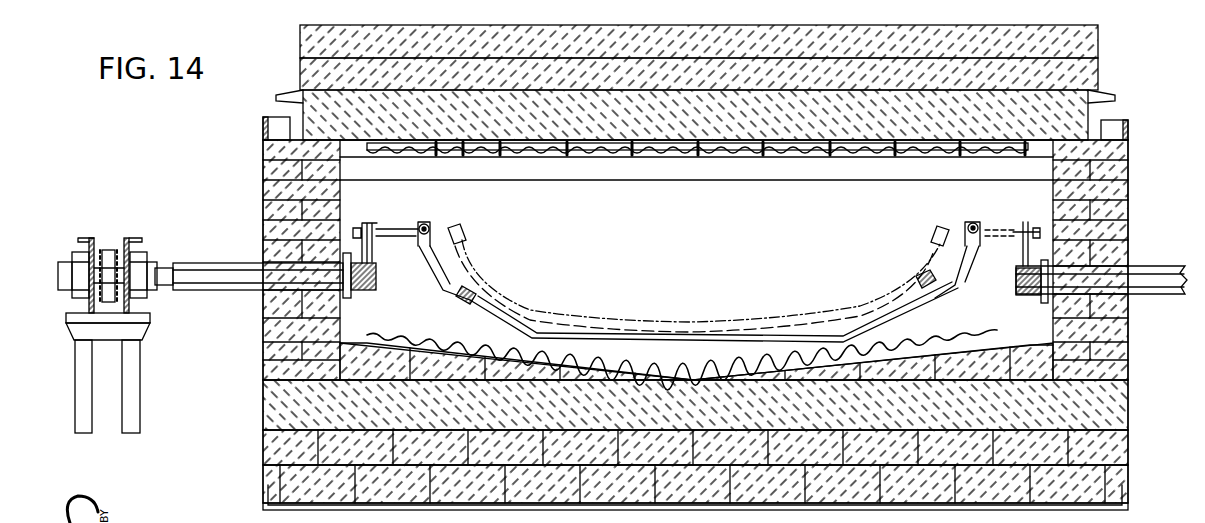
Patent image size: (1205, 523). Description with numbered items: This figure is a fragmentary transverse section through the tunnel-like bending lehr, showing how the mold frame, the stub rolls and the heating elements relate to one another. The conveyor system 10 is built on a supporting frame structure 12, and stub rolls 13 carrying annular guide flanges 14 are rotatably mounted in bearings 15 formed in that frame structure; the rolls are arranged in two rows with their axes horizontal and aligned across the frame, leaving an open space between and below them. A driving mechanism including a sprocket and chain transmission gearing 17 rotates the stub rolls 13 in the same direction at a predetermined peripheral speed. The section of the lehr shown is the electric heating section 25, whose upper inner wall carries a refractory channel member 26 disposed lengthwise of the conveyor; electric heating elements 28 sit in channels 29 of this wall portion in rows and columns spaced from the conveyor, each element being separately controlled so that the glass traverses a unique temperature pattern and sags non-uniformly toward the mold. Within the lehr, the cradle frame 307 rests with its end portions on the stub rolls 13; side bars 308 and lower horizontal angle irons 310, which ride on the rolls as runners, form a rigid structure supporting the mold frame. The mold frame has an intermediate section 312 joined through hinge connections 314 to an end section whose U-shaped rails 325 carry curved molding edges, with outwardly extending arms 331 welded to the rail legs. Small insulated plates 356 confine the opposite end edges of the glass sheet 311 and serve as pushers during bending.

The conveyor system 10 is at (141, 357).
The supporting frame structure 12 is at (130, 333).
The stub rolls 13 is at (226, 277).
The annular guide flanges 14 is at (352, 258).
The bearings 15 is at (75, 255).
The sprocket and chain transmission gearing 17 is at (108, 247).
The electric heating section 25 is at (263, 185).
The refractory channel member 26 is at (464, 153).
The electric heating elements 28 is at (513, 153).
The channels 29 is at (584, 153).
The cradle frame 307 is at (364, 226).
The side bars 308 is at (512, 326).
The horizontal parallel angle irons 310 is at (355, 260).
The glass sheet 311 is at (472, 260).
The intermediate section 312 is at (691, 322).
The hinge connections 314 is at (466, 292).
The rails 325 is at (424, 224).
The arms 331 is at (437, 262).
The plates 356 is at (462, 237).